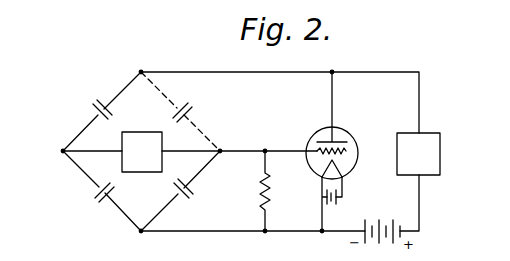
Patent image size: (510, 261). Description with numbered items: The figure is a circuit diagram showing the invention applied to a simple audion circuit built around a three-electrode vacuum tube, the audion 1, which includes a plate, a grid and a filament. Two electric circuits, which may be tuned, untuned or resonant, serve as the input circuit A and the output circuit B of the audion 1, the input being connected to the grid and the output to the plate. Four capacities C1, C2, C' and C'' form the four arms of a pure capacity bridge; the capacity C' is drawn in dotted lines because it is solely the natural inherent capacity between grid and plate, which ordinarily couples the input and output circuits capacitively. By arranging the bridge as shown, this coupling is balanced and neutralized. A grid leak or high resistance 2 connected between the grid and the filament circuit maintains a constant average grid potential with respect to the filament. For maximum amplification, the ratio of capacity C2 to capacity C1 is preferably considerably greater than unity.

The audion 1 is at (366, 148).
The grid leak or high resistance 2 is at (258, 191).
The capacity C1 is at (180, 191).
The capacity C2 is at (102, 191).
The capacity C' is at (180, 111).
The capacity C'' is at (102, 111).
The electric circuit A is at (142, 152).
The electric circuit B is at (418, 154).